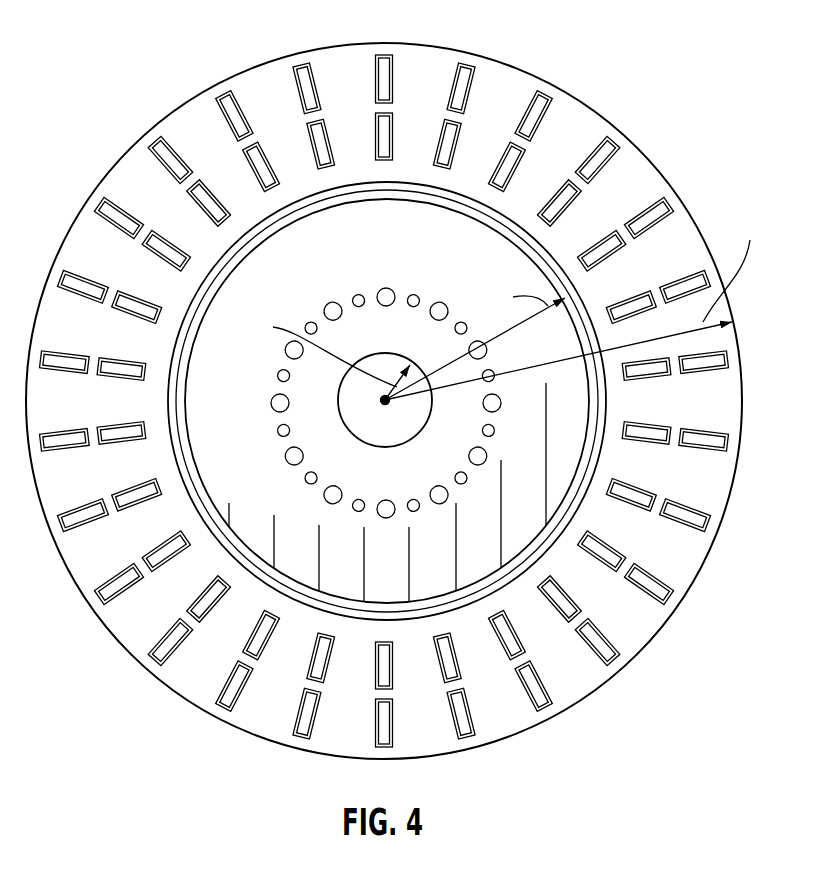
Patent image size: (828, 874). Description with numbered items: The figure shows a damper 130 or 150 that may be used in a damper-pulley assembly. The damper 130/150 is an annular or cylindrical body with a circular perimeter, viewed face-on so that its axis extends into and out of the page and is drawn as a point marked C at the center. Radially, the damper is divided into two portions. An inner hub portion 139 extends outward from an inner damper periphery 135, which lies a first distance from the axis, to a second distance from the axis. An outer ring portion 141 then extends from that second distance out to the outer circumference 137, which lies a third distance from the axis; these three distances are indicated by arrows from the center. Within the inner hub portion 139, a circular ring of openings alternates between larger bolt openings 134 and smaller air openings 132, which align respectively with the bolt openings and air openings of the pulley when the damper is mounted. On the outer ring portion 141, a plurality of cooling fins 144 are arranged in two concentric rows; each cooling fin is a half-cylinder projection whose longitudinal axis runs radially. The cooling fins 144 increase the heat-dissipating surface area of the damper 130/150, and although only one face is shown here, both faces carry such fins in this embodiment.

The damper 130 is at (630, 58).
The damper 150 is at (403, 387).
The outer circumference 137 is at (203, 88).
The cooling fins 144 is at (103, 208).
The outer ring portion 141 is at (205, 657).
The inner hub portion 139 is at (233, 490).
The bolt openings 134 is at (386, 289).
The air openings 132 is at (414, 295).
The inner damper periphery 135 is at (345, 388).